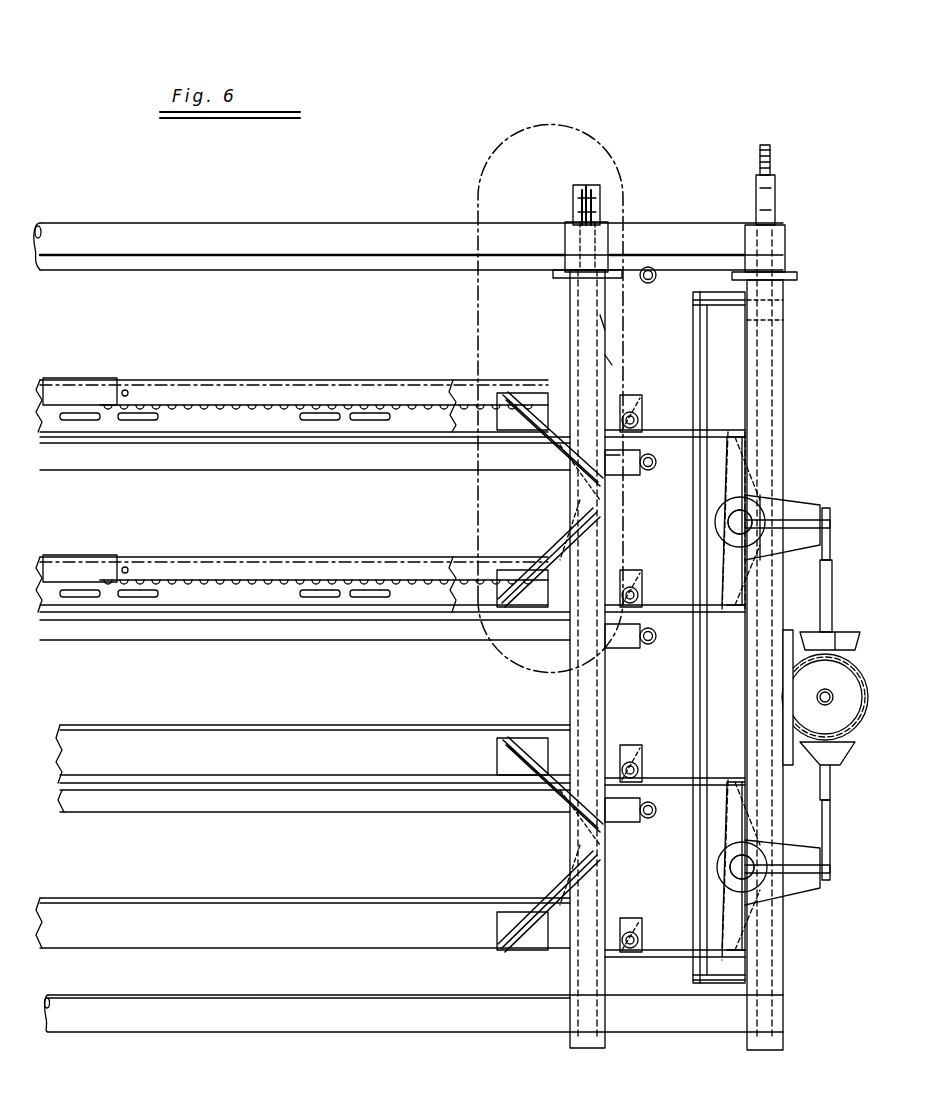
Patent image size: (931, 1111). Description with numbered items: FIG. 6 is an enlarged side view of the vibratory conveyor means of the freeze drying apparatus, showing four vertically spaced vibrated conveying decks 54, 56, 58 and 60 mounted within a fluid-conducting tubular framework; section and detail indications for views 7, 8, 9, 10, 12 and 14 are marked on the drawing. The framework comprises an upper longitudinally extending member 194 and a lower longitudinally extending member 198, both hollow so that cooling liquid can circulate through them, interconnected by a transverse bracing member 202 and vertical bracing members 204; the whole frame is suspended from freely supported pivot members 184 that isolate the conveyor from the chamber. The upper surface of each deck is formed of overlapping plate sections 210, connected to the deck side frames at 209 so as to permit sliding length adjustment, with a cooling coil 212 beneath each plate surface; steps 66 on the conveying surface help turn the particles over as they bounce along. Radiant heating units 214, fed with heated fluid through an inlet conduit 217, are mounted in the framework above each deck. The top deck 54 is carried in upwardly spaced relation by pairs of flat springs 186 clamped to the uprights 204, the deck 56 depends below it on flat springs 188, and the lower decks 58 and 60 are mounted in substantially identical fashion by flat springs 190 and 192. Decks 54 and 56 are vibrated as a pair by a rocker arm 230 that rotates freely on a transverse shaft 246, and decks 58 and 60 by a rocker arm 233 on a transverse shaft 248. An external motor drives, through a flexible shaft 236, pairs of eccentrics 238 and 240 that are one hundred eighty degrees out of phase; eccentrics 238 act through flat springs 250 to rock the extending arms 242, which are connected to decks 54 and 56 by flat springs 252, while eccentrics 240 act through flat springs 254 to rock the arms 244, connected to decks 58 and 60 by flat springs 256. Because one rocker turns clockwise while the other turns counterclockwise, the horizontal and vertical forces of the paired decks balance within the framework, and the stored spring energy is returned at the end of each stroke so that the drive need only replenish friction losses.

The conveying deck 54 is at (232, 398).
The conveying deck 56 is at (236, 568).
The conveying deck 58 is at (234, 740).
The conveying deck 60 is at (234, 913).
The steps 66 is at (112, 380).
The pivot members 184 is at (772, 160).
The flat springs 186 is at (545, 452).
The flat springs 188 is at (548, 545).
The flat springs 190 is at (545, 800).
The flat springs 192 is at (548, 890).
The upper longitudinally extending member 194 is at (320, 222).
The lower longitudinally extending member 198 is at (265, 1020).
The transverse bracing member 202 is at (572, 203).
The vertical bracing member 204 is at (580, 318).
The connection 209 is at (128, 742).
The plate sections 210 is at (85, 375).
The cooling coil 212 is at (224, 425).
The radiant heating unit 214 is at (357, 272).
The inlet conduit 217 is at (640, 272).
The rocker arm 230 is at (800, 505).
The rocker arm 233 is at (800, 882).
The flexible shaft 236 is at (817, 697).
The eccentrics 238 is at (838, 745).
The eccentrics 240 is at (855, 655).
The extending arms 242 is at (760, 462).
The arms 244 is at (735, 800).
The transverse shaft 246 is at (733, 522).
The transverse shaft 248 is at (735, 867).
The flat springs 250 is at (832, 560).
The flat springs 252 is at (660, 440).
The flat springs 254 is at (832, 825).
The flat springs 256 is at (660, 790).
The section line 7- 7 is at (474, 268).
The section line 8- 8 is at (460, 180).
The section line 9- 9 is at (93, 493).
The section line 10- 10 is at (48, 548).
The detail circle 12 is at (160, 598).
The section line 14- 14 is at (455, 958).